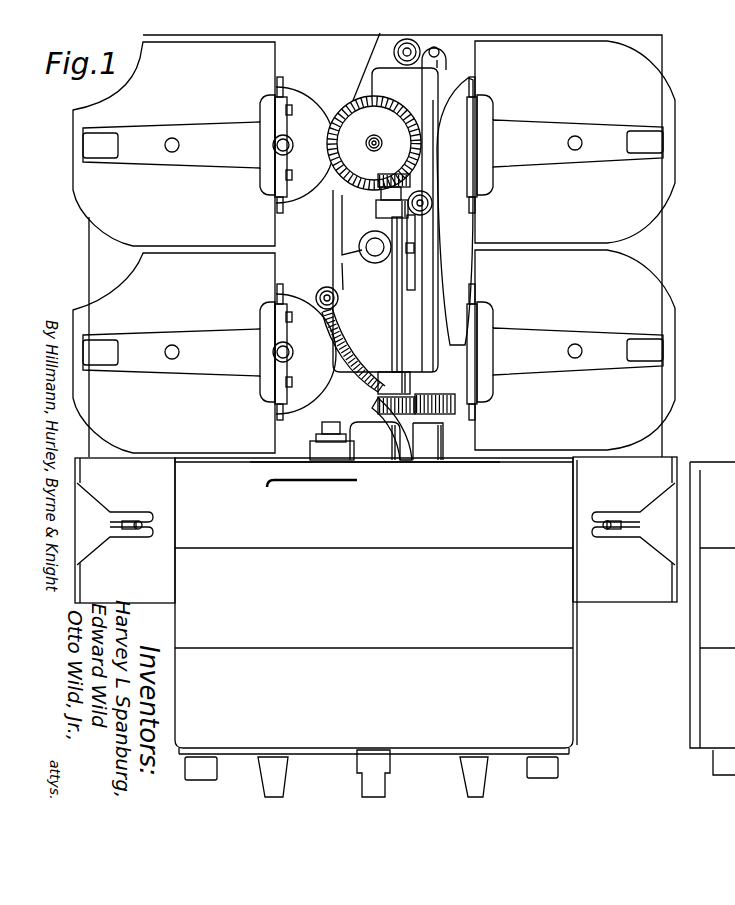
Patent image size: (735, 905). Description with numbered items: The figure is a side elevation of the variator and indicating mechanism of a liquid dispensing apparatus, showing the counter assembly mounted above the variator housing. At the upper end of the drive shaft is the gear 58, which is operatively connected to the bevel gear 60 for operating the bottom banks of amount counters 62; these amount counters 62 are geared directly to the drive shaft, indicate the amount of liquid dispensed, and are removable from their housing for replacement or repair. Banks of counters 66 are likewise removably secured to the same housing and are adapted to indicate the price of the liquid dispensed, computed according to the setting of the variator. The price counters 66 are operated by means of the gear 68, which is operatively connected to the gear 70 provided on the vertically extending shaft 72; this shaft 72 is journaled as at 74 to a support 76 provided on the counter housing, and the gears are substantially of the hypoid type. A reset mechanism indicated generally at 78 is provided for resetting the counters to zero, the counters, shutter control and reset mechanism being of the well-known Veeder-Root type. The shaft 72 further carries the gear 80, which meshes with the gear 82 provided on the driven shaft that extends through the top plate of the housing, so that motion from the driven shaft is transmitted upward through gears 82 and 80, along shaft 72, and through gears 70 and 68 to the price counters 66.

The gear 58 is at (362, 398).
The bevel gear 60 is at (328, 368).
The amount counters 62 is at (82, 296).
The banks of counters 66 is at (690, 105).
The gear 68 is at (350, 108).
The gear 70 is at (409, 182).
The vertically extending shaft 72 is at (392, 297).
The journal 74 is at (382, 208).
The support 76 is at (382, 52).
The reset mechanism 78 is at (363, 245).
The gear 80 is at (414, 394).
The gear 82 is at (452, 406).